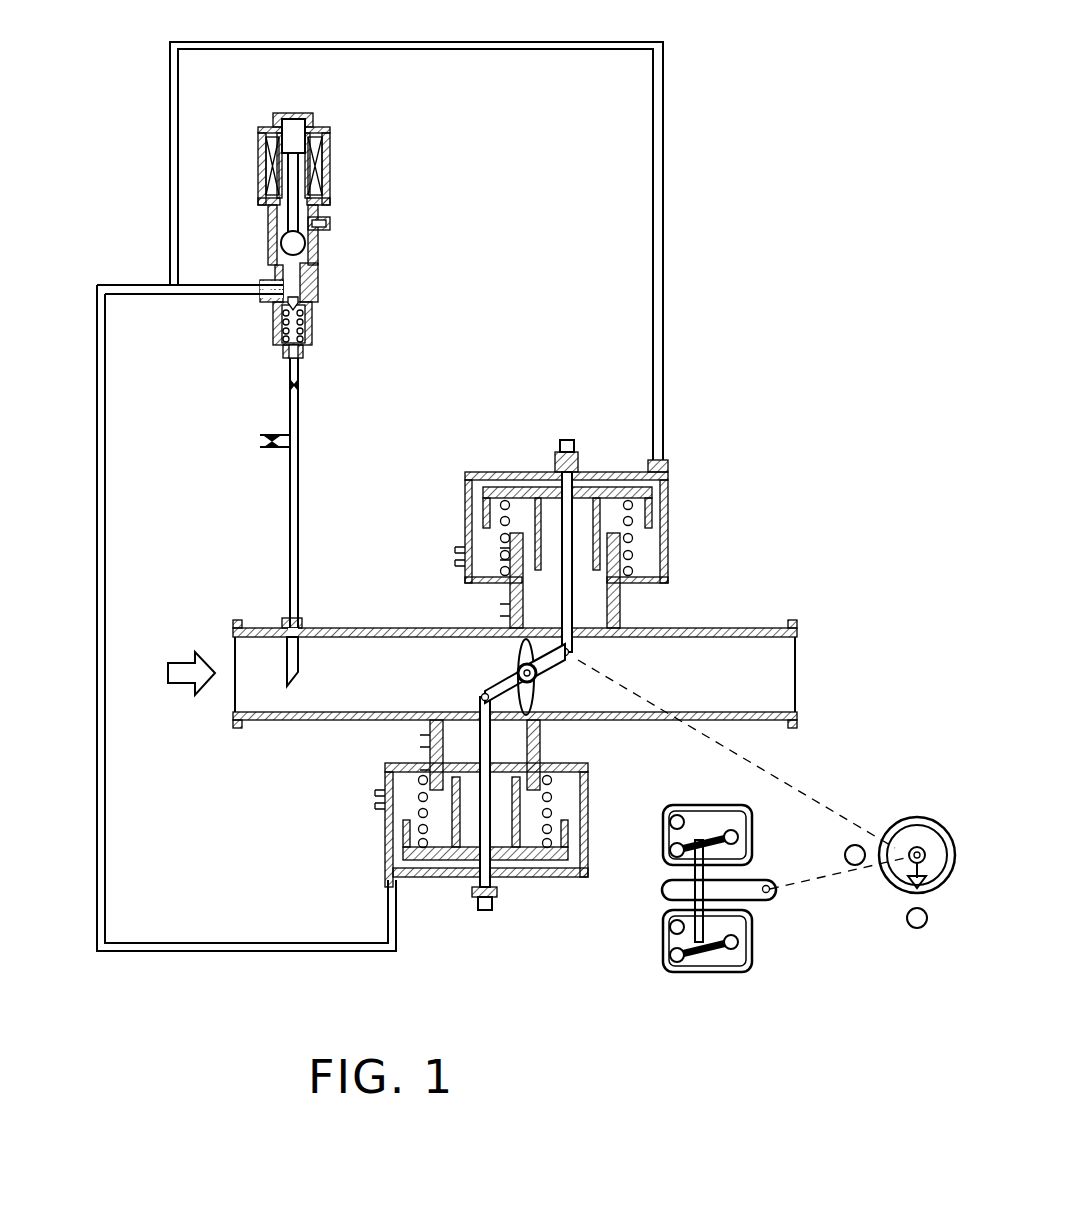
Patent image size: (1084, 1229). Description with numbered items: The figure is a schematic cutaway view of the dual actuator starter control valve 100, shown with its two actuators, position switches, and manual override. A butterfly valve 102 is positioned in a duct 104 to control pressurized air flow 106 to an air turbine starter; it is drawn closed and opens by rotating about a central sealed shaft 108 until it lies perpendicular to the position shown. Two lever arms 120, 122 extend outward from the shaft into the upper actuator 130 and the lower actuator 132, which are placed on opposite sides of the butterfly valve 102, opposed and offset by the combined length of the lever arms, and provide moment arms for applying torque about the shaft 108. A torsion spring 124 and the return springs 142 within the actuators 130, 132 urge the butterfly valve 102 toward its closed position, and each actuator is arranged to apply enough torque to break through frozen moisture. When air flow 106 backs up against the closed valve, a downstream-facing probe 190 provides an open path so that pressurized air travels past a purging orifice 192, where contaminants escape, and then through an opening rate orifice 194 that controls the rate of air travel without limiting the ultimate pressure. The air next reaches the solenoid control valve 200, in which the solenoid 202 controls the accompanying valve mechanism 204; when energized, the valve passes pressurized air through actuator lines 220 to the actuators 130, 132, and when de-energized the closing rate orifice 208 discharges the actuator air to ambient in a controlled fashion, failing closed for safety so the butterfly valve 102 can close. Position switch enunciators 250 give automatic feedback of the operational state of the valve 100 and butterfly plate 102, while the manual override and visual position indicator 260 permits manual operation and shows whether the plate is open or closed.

The dual actuator starter control valve 100 is at (486, 945).
The butterfly valve 102 is at (510, 630).
The duct 104 is at (705, 628).
The pressurized air flow 106 is at (195, 690).
The central sealed shaft 108 is at (523, 668).
The lever arm 120 is at (483, 688).
The lever arm 122 is at (575, 660).
The torsion spring 124 is at (538, 680).
The upper actuator 130 is at (535, 668).
The lower actuator 132 is at (535, 878).
The return spring 142 is at (632, 518).
The downstream-facing probe 190 is at (302, 655).
The purging orifice 192 is at (262, 440).
The opening rate orifice 194 is at (300, 386).
The solenoid control valve 200 is at (370, 230).
The solenoid 202 is at (330, 190).
The valve mechanism 204 is at (312, 292).
The closing rate orifice 208 is at (318, 220).
The actuator lines 220 is at (348, 42).
The position switch enunciators 250 is at (705, 972).
The manual override and visual position indicator 260 is at (895, 818).